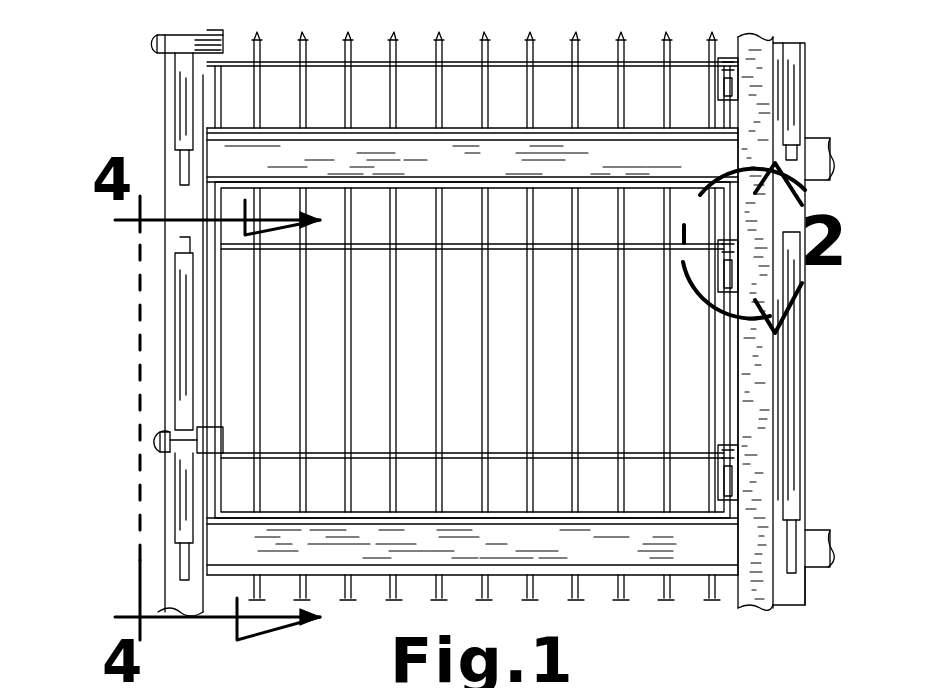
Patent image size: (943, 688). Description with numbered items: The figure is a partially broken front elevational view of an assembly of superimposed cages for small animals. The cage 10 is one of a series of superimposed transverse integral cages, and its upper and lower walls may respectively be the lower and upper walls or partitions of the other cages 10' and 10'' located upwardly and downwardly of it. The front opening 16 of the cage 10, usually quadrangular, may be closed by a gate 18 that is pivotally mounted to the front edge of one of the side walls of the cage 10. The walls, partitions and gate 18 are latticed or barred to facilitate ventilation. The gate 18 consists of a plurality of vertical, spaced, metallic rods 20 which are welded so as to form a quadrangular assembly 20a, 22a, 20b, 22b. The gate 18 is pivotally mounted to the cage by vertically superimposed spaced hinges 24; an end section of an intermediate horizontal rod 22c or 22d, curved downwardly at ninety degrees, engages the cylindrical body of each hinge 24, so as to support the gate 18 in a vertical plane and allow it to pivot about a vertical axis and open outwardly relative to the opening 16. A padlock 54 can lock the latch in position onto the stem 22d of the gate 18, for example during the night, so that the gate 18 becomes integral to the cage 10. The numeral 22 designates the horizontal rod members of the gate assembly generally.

The cage 10 is at (116, 324).
The cage 10' is at (131, 323).
The cage 10'' is at (839, 556).
The front opening 16 is at (755, 392).
The gate 18 is at (705, 367).
The vertical rods 20 is at (242, 375).
The vertical rod of quadrangular assembly 20a is at (165, 500).
The vertical rod of quadrangular assembly 20b is at (722, 208).
The top rail 22 is at (410, 62).
The horizontal rod of quadrangular assembly 22a is at (320, 192).
The horizontal rod of quadrangular assembly 22b is at (740, 455).
The intermediate horizontal rod 22c is at (548, 240).
The stem 22d is at (598, 455).
The hinge 24 is at (710, 92).
The padlock 54 is at (245, 438).